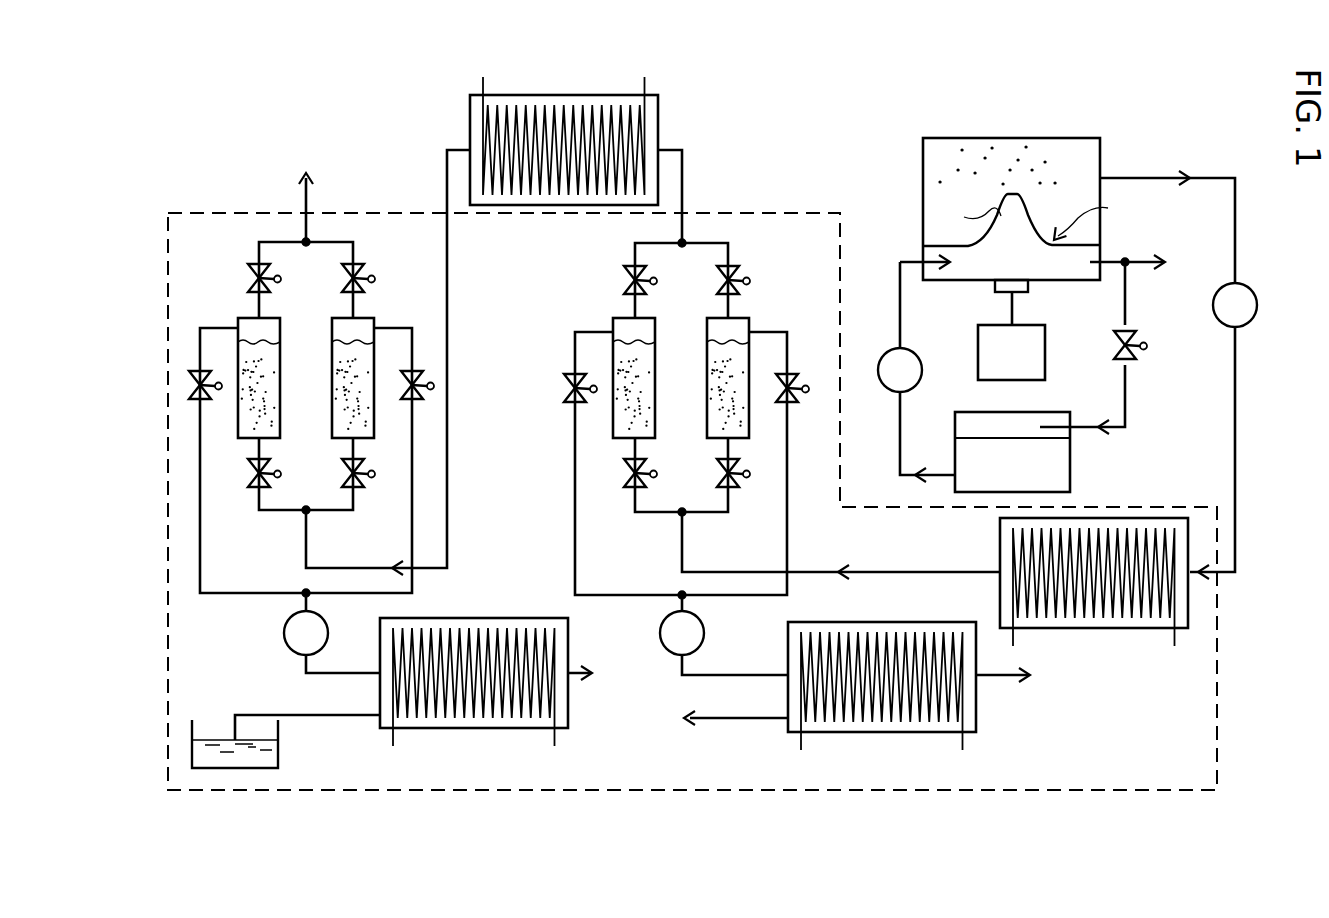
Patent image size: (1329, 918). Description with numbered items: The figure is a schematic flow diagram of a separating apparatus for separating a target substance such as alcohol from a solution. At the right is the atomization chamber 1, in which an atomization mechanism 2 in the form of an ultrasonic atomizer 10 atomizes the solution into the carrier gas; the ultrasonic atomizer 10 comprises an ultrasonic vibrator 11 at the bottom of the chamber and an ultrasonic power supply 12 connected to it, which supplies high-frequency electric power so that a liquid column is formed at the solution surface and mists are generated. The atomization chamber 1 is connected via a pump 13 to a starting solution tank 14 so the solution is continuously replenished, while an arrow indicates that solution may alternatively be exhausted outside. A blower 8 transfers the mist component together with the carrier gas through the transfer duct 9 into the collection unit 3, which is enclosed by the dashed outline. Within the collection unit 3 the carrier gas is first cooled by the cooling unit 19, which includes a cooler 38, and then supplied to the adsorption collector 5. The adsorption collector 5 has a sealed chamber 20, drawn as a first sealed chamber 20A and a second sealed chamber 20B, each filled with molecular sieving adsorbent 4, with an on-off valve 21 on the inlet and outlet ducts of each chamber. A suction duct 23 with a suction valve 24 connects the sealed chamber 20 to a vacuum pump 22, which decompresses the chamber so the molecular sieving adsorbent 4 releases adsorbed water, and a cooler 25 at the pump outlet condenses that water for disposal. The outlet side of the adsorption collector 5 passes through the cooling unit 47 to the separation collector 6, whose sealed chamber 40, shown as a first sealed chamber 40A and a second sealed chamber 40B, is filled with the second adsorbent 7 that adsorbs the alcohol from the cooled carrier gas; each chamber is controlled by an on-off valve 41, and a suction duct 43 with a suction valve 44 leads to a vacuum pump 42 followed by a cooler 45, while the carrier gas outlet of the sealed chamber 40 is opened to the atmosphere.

The atomization chamber 1 is at (1100, 150).
The atomization mechanism 2 is at (1141, 344).
The collection unit 3 is at (1025, 790).
The molecular sieving adsorbent 4 is at (676, 303).
The adsorption collector 5 is at (1036, 286).
The separation collector 6 is at (367, 451).
The second adsorbent 7 is at (318, 300).
The blower 8 is at (1213, 303).
The transfer duct 9 is at (446, 172).
The ultrasonic atomizer 10 is at (1094, 368).
The ultrasonic vibrator 11 is at (1027, 360).
The ultrasonic power supply 12 is at (1032, 292).
The pump 13 is at (878, 345).
The starting solution tank 14 is at (973, 412).
The cooling unit 19 is at (1096, 643).
The sealed chamber 20 is at (742, 442).
The first sealed chamber 20A is at (750, 363).
The second sealed chamber 20B is at (655, 317).
The on-off valve 21 is at (626, 270).
The vacuum pump 22 is at (670, 645).
The suction duct 23 is at (575, 535).
The suction valve 24 is at (568, 394).
The cooler 25 is at (813, 744).
The cooler 38 is at (1141, 622).
The sealed chamber 40 is at (318, 278).
The first sealed chamber 40A is at (375, 308).
The second sealed chamber 40B is at (240, 308).
The on-off valve 41 is at (277, 283).
The vacuum pump 42 is at (285, 646).
The suction duct 43 is at (200, 569).
The suction valve 44 is at (203, 402).
The cooler 45 is at (435, 742).
The cooling unit 47 is at (453, 122).